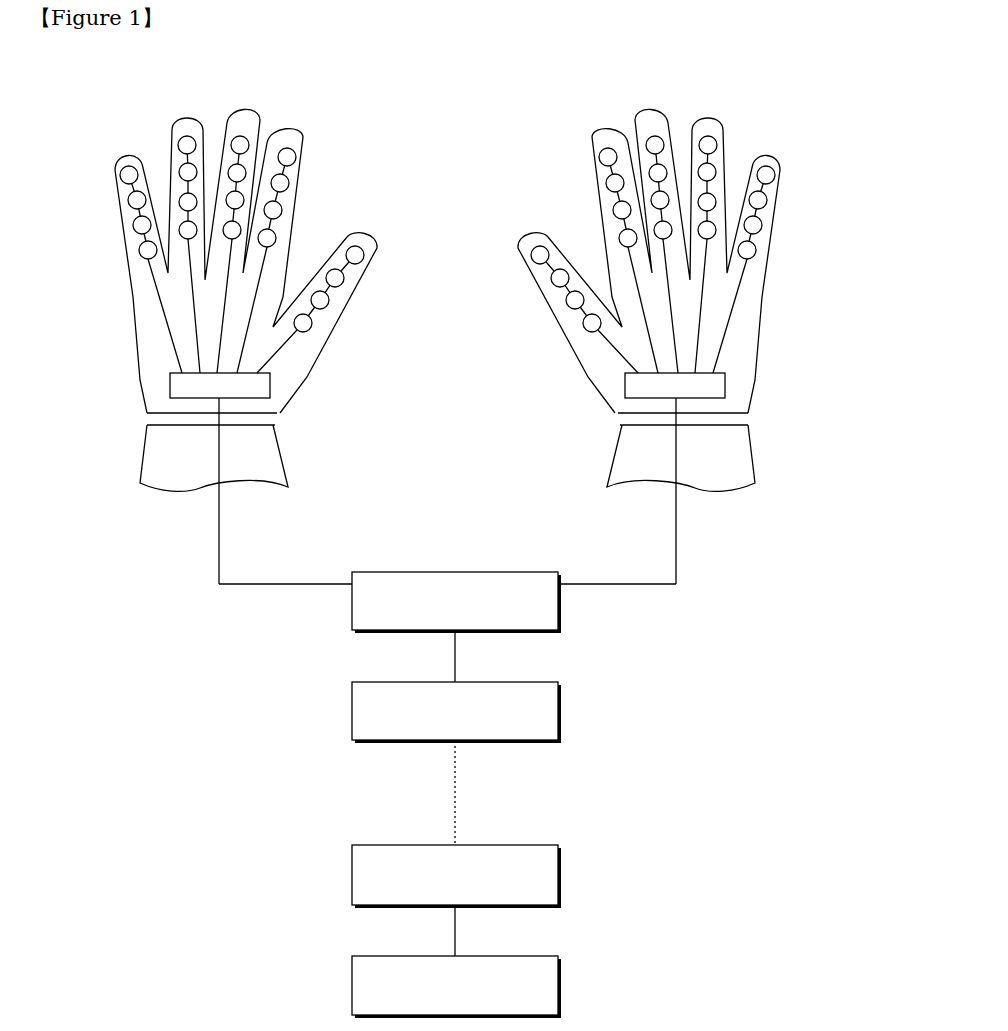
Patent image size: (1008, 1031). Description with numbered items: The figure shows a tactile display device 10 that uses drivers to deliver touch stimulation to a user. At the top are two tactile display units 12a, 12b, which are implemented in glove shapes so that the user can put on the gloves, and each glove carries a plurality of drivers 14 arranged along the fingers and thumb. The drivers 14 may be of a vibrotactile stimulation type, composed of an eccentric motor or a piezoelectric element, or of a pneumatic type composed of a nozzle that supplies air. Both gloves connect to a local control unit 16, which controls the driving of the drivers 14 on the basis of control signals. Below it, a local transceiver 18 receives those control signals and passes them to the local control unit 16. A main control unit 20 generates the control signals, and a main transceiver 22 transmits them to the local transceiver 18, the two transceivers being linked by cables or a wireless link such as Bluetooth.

The tactile display device 10 is at (520, 84).
The tactile display unit 12a is at (290, 346).
The tactile display unit 12b is at (781, 204).
The drivers 14 is at (357, 252).
The local control unit 16 is at (560, 610).
The local transceiver 18 is at (560, 709).
The main transceiver 22 is at (560, 873).
The main control unit 20 is at (560, 983).